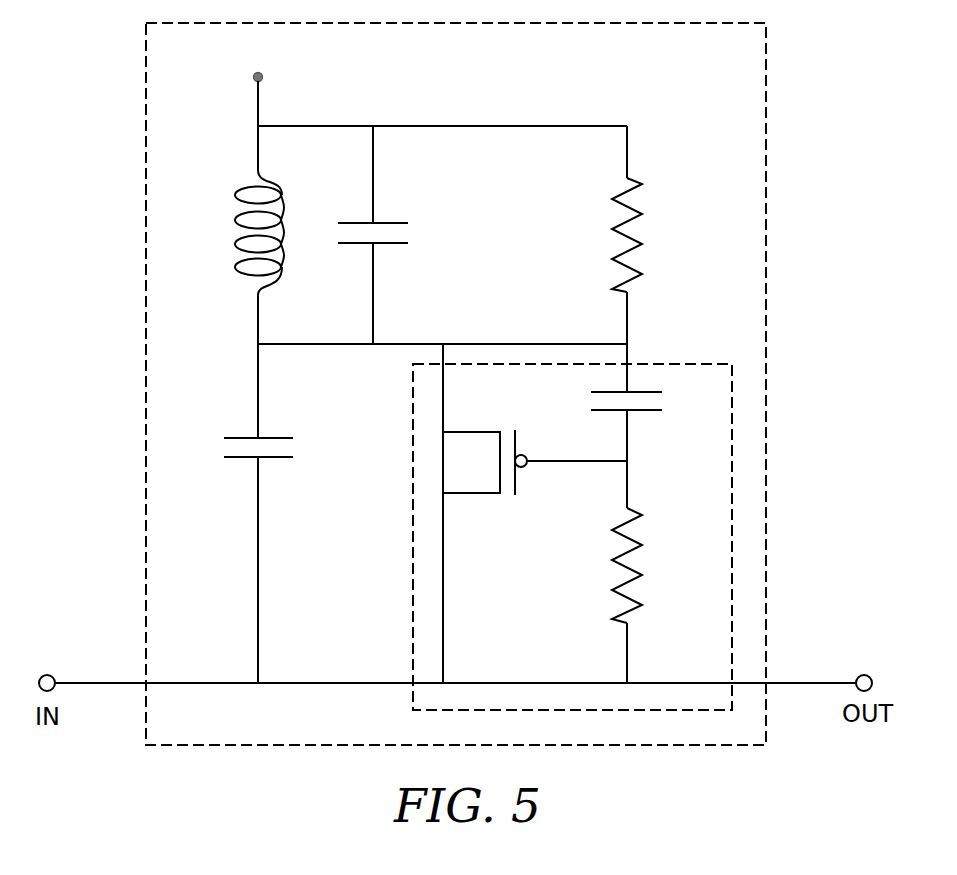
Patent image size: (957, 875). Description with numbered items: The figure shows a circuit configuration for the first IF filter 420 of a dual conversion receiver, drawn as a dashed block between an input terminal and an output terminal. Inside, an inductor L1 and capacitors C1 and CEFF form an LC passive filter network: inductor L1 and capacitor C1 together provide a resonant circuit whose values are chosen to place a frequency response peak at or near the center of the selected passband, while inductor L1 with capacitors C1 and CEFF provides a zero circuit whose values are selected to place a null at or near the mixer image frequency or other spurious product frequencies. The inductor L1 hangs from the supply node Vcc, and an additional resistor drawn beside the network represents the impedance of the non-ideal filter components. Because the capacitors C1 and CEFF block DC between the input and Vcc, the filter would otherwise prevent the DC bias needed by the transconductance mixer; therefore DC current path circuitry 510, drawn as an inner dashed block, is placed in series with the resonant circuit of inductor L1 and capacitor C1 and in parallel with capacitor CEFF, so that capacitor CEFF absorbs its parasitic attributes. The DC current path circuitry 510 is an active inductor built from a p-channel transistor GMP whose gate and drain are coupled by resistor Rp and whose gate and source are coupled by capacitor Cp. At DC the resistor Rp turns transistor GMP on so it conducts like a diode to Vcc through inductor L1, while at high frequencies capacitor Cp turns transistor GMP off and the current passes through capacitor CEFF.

The first IF filter 420 is at (146, 208).
The DC current path circuitry 510 is at (413, 566).
The inductor L1 is at (243, 304).
The capacitor C1 is at (391, 235).
The capacitor CEFF is at (229, 560).
The transistor GMP is at (535, 513).
The capacitor Cp is at (647, 449).
The resistor Rp is at (648, 595).
The supply voltage Vcc is at (260, 105).